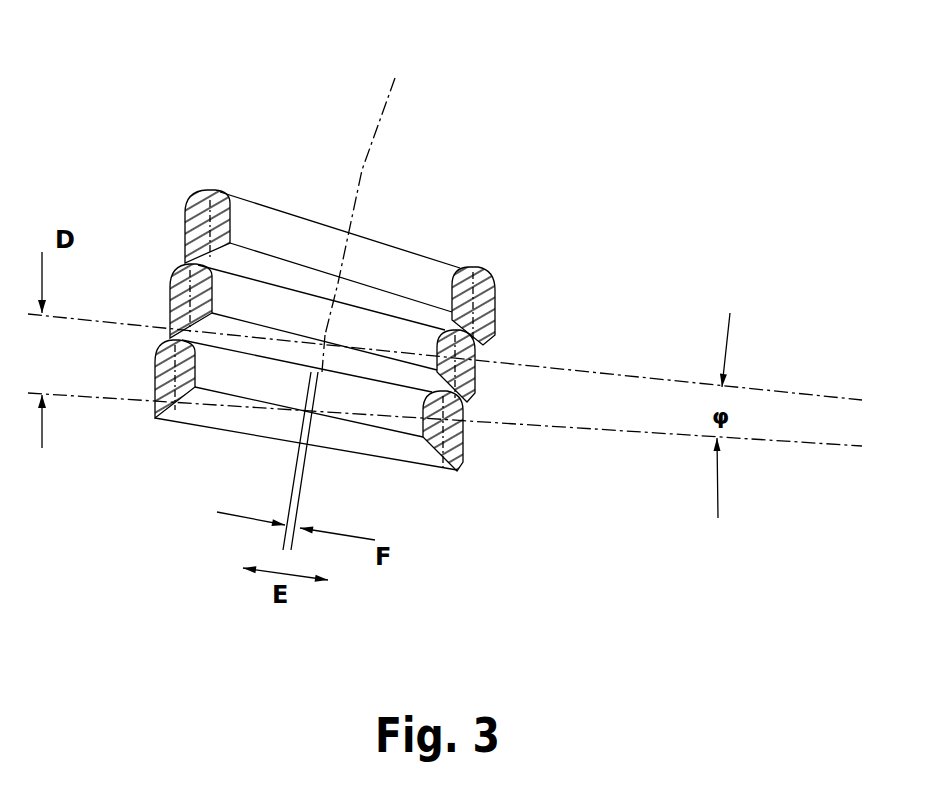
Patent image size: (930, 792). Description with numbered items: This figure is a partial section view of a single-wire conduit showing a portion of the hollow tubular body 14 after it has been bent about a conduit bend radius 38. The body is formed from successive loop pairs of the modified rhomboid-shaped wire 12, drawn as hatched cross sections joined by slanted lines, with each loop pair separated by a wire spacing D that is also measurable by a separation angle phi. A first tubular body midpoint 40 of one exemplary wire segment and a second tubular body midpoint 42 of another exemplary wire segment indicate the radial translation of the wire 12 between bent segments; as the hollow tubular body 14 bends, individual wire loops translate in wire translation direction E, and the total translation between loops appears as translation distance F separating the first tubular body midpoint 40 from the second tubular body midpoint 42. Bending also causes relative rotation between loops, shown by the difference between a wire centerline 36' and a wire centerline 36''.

The wire 12 is at (252, 297).
The hollow tubular body 14 is at (298, 133).
The wire centerline 36' is at (501, 339).
The wire centerline 36'' is at (501, 432).
The conduit bend radius 38 is at (394, 94).
The first tubular body midpoint 40 is at (303, 423).
The second tubular body midpoint 42 is at (322, 333).